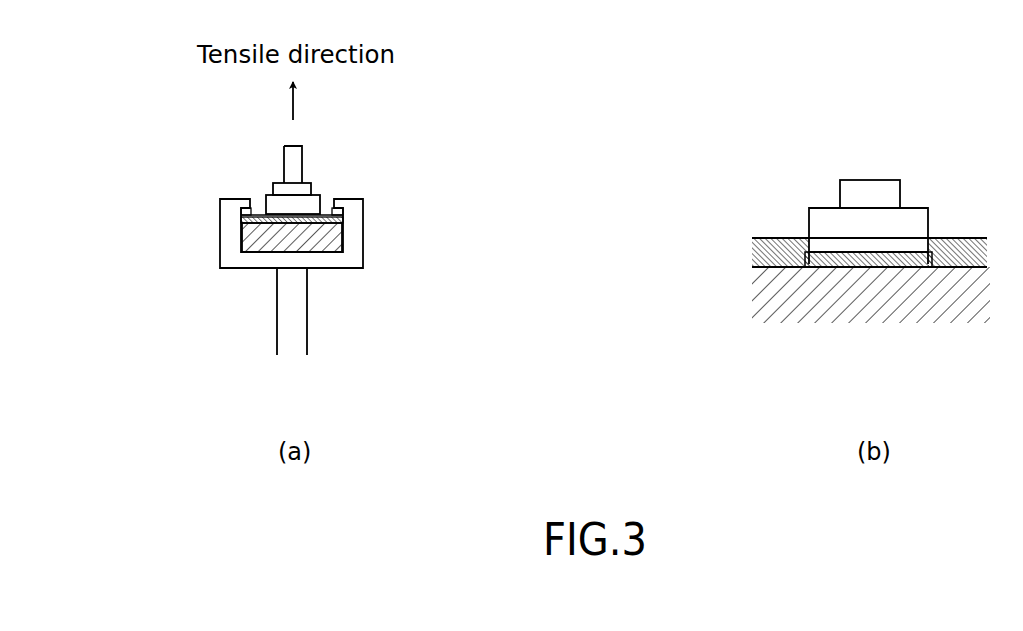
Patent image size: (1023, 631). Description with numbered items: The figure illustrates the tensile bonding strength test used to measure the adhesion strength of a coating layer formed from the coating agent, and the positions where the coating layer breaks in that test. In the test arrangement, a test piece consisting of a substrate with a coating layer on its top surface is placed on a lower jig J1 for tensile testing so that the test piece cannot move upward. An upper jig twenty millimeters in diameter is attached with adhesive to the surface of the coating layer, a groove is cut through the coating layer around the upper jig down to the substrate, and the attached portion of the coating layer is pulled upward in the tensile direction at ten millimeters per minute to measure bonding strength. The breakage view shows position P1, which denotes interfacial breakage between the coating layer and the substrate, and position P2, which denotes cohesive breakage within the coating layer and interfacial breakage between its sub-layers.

The lower jig J1 is at (235, 246).
The position P1 is at (872, 268).
The position P2 is at (903, 248).